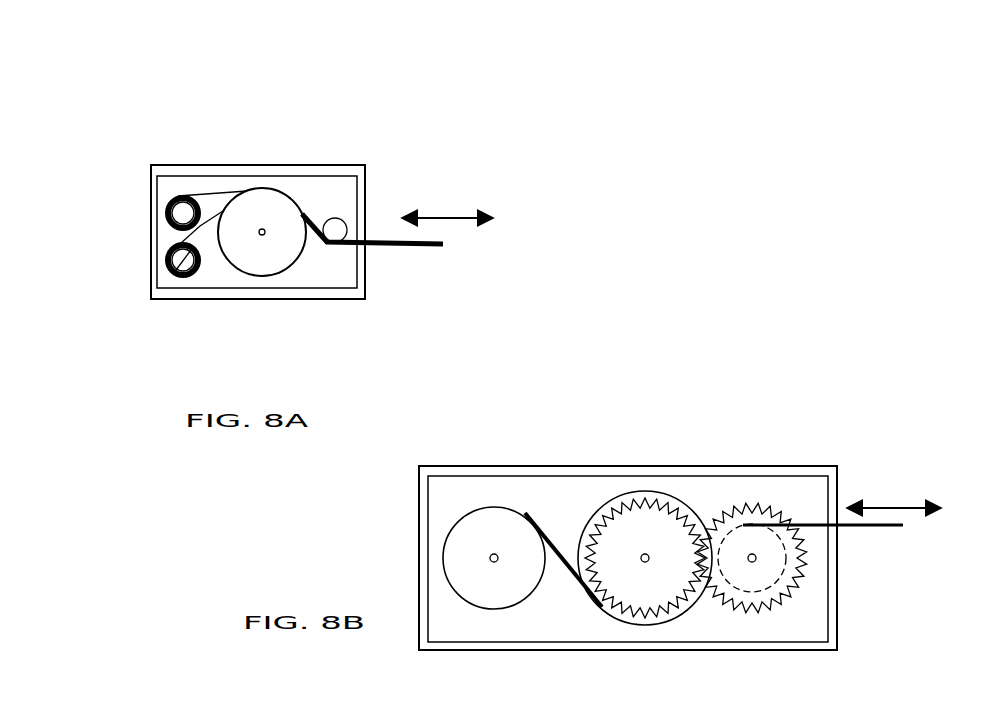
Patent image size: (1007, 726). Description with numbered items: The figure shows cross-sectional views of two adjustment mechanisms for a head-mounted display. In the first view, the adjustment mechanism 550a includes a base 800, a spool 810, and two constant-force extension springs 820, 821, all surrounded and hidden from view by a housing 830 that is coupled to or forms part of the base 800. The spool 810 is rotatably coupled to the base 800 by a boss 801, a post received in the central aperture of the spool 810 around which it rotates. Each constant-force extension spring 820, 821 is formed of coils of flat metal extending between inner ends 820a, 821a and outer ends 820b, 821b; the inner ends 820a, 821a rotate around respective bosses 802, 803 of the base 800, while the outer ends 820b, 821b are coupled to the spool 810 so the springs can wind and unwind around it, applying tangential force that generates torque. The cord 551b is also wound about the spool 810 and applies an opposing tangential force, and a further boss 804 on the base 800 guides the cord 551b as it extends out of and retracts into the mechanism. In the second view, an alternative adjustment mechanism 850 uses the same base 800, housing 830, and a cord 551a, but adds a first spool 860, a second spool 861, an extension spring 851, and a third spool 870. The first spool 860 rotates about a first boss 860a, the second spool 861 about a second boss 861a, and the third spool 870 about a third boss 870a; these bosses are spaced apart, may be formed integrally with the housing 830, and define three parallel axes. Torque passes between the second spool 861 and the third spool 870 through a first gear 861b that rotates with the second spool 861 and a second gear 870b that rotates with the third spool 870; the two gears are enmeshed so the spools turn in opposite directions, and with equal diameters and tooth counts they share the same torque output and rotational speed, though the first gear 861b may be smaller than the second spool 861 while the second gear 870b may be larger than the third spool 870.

In FIG. 8A, the adjustment mechanism 550a is at (398, 100).
In FIG. 8B, the adjustment mechanism 850 is at (812, 362).
In FIG. 8A, the base 800 is at (335, 176).
In FIG. 8B, the base 800 is at (468, 476).
In FIG. 8A, the housing 830 is at (268, 165).
In FIG. 8B, the housing 830 is at (713, 466).
In FIG. 8A, the spool 810 is at (257, 277).
In FIG. 8A, the boss 801 is at (263, 235).
In FIG. 8A, the boss 802 is at (166, 201).
In FIG. 8A, the boss 803 is at (172, 277).
In FIG. 8A, the boss 804 is at (345, 222).
In FIG. 8A, the constant-force extension spring 820 is at (165, 210).
In FIG. 8A, the inner end 820a is at (188, 196).
In FIG. 8A, the outer end 820b is at (236, 191).
In FIG. 8A, the constant-force extension spring 821 is at (165, 258).
In FIG. 8A, the inner end 821a is at (178, 272).
In FIG. 8A, the outer end 821b is at (210, 228).
In FIG. 8A, the cord 551b is at (405, 248).
In FIG. 8B, the cord 551a is at (880, 527).
In FIG. 8B, the extension spring 851 is at (565, 560).
In FIG. 8B, the first spool 860 is at (500, 508).
In FIG. 8B, the first boss 860a is at (494, 562).
In FIG. 8B, the second spool 861 is at (652, 491).
In FIG. 8B, the second boss 861a is at (645, 562).
In FIG. 8B, the first gear 861b is at (622, 512).
In FIG. 8B, the third spool 870 is at (750, 510).
In FIG. 8B, the third boss 870a is at (752, 562).
In FIG. 8B, the second gear 870b is at (787, 514).